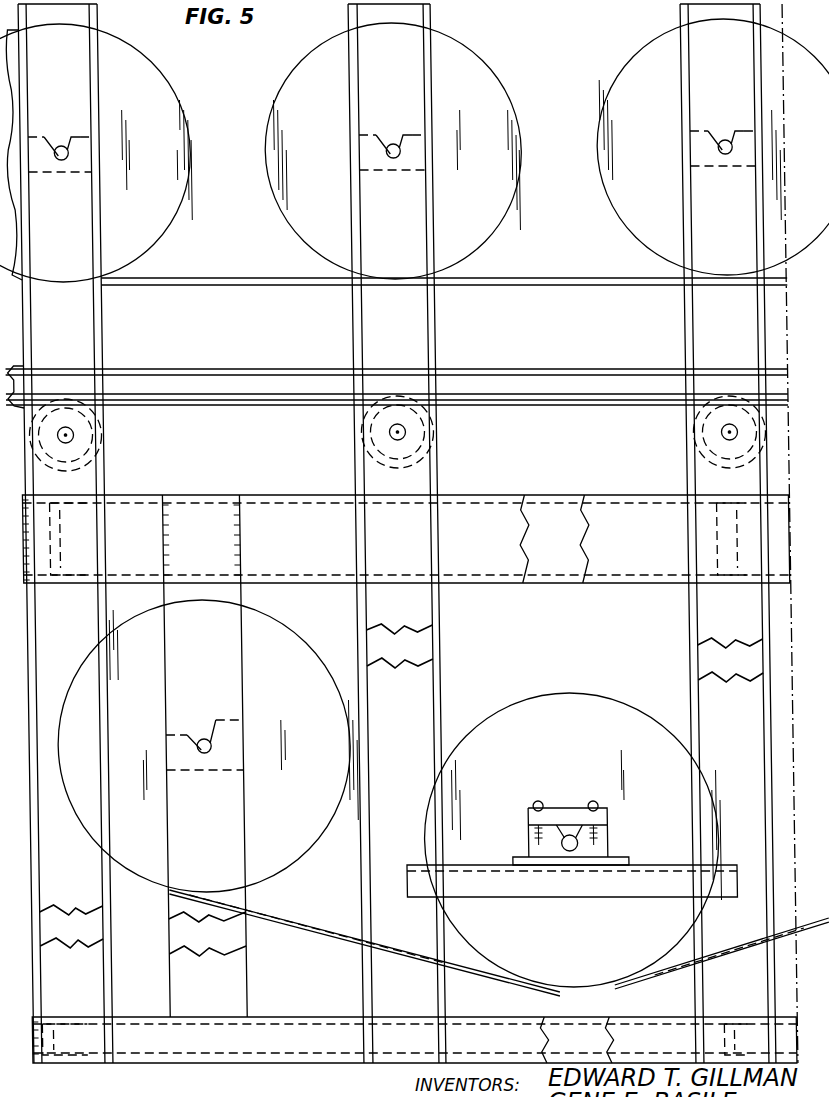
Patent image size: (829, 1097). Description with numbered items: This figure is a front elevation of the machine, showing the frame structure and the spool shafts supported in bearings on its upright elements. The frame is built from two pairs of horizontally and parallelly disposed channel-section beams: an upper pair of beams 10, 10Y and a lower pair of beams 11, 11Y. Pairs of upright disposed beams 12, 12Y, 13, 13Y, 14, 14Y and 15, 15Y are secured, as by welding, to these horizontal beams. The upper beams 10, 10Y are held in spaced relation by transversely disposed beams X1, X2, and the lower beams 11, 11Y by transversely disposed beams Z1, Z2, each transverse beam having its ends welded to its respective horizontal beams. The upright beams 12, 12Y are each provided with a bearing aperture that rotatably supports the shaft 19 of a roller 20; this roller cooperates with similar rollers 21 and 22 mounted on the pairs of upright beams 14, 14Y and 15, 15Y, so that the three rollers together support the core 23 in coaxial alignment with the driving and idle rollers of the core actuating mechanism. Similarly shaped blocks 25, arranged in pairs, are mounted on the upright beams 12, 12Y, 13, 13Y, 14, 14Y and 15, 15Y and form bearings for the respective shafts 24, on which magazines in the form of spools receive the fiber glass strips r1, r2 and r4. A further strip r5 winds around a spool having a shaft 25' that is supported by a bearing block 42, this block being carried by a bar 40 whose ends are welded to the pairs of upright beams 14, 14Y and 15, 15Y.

The horizontally disposed beam 10 is at (556, 505).
The horizontally disposed beam 10Y is at (470, 505).
The horizontally disposed beam 11 is at (598, 1032).
The horizontally disposed beam 11Y is at (510, 1028).
The upright disposed beam 12 is at (88, 980).
The upright disposed beam 12Y is at (84, 942).
The upright disposed beam 13 is at (228, 980).
The upright disposed beam 13Y is at (222, 944).
The upright disposed beam 14 is at (372, 979).
The upright disposed beam 14Y is at (420, 668).
The upright disposed beam 15 is at (686, 628).
The upright disposed beam 15Y is at (708, 660).
The shaft 19 is at (70, 435).
The roller 20 is at (88, 463).
The roller 21 is at (405, 433).
The roller 22 is at (692, 443).
The core 23 is at (470, 370).
The shaft 24 is at (58, 146).
The block 25 is at (396, 464).
The shaft 25' is at (571, 817).
The bar 40 is at (575, 888).
The bearing block 42 is at (598, 843).
The fiber glass strip r1 is at (235, 280).
The fiber glass strip r2 is at (598, 280).
The fiber glass strip r4 is at (335, 922).
The fiber glass strip r5 is at (682, 962).
The transversely disposed beam X1 is at (103, 497).
The transversely disposed beam X2 is at (700, 576).
The transversely disposed beam Z1 is at (68, 1035).
The transversely disposed beam Z2 is at (752, 1020).